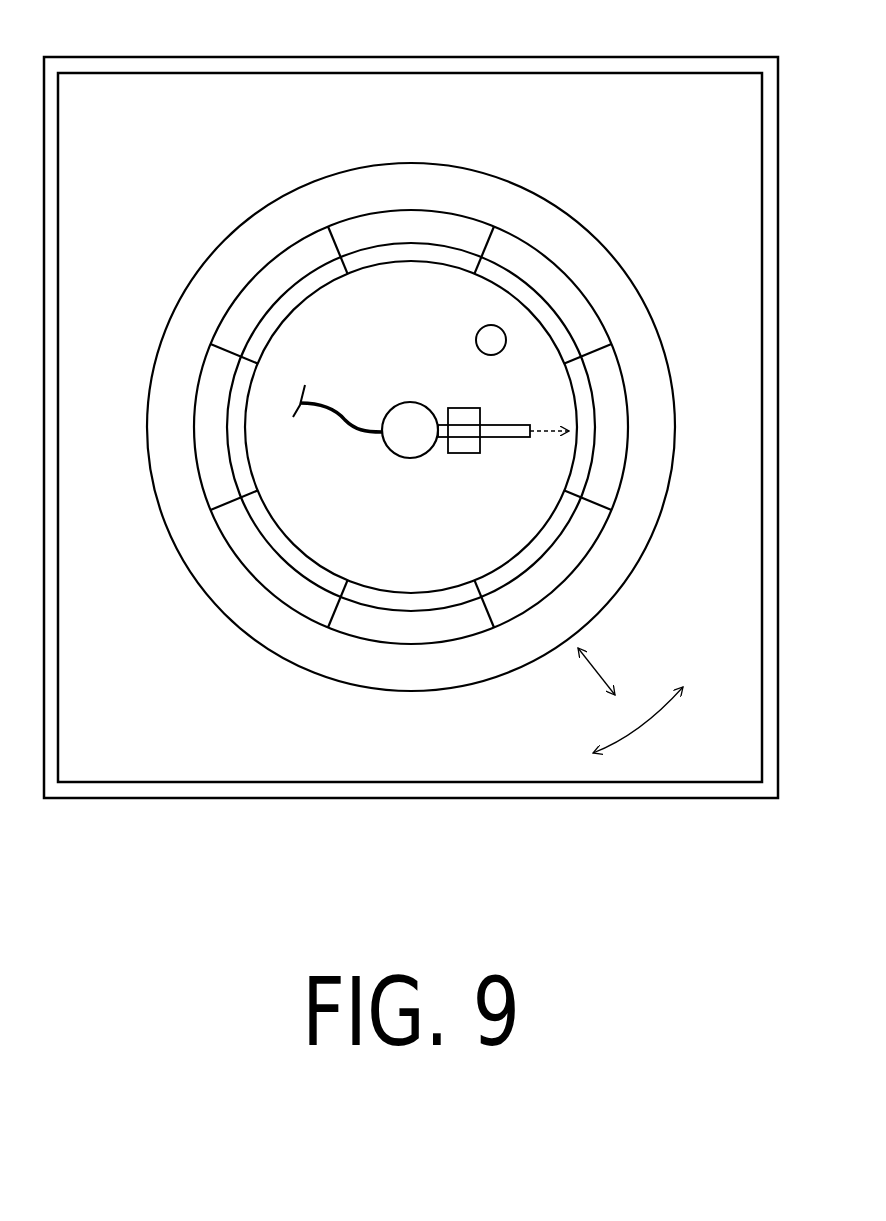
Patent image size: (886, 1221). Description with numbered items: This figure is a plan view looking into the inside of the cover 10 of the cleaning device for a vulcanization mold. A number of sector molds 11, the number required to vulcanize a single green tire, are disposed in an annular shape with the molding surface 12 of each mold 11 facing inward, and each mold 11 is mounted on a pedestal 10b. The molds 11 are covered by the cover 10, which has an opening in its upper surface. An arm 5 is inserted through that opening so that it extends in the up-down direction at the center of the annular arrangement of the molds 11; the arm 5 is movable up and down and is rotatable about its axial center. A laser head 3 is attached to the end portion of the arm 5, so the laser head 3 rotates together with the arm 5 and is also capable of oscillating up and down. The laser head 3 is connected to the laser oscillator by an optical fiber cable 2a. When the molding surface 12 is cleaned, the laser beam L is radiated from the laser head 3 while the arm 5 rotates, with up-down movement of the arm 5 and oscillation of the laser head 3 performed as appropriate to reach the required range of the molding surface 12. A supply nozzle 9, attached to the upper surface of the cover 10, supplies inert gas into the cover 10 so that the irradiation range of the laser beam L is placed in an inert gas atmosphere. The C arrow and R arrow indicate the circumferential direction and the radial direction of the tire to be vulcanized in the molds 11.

The cover 10 is at (380, 782).
The pedestal 10b is at (213, 280).
The sector mold 11 is at (553, 290).
The molding surface 12 is at (288, 312).
The supply nozzle 9 is at (480, 338).
The arm 5 is at (402, 443).
The laser head 3 is at (508, 423).
The optical fiber cable 2a is at (343, 430).
The laser beam L is at (543, 438).
The R arrow R is at (600, 669).
The C arrow C is at (638, 720).